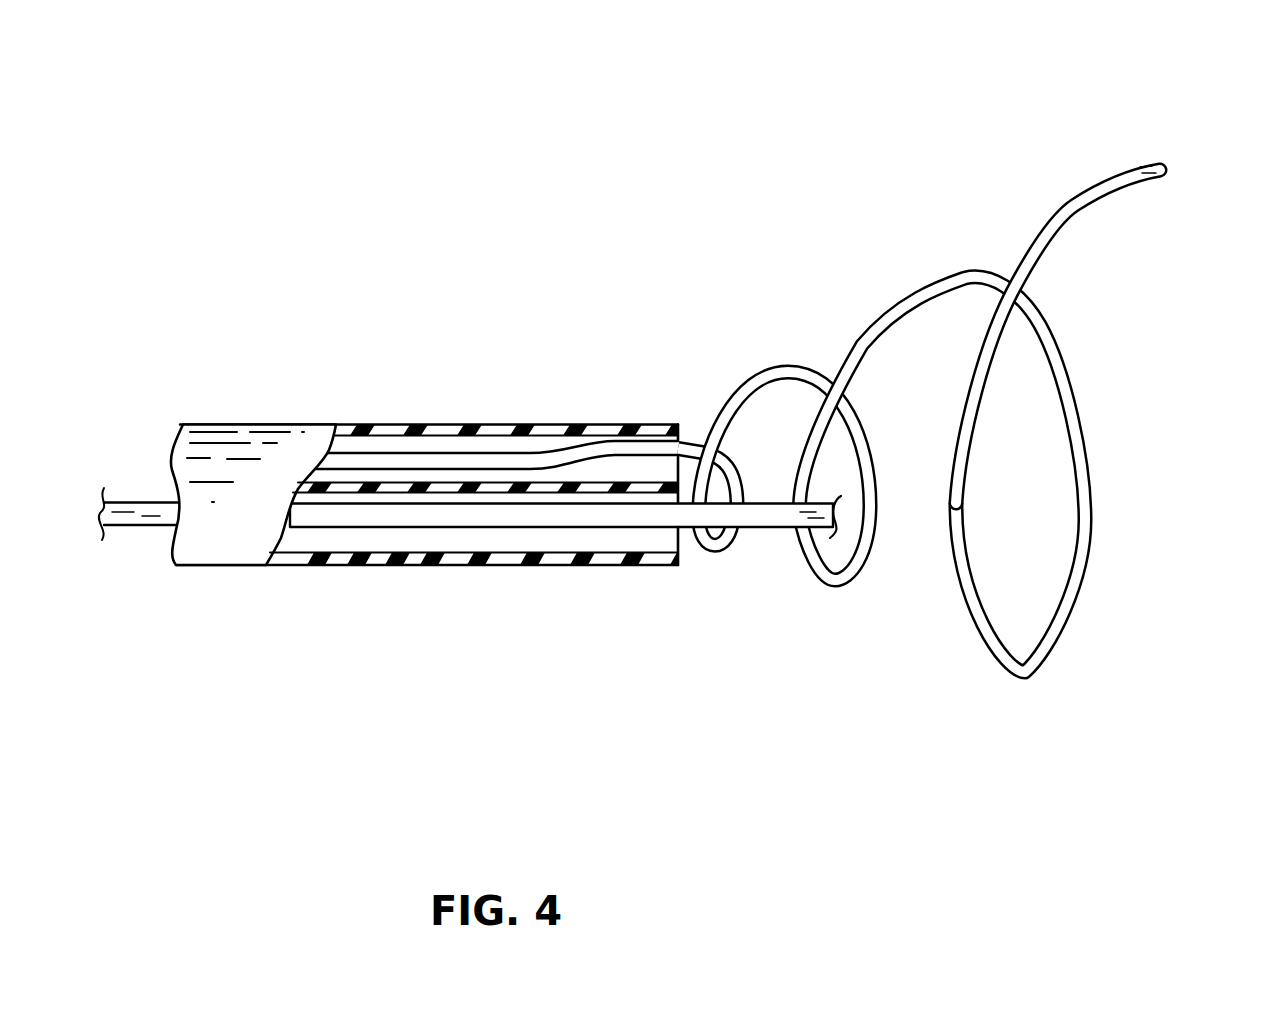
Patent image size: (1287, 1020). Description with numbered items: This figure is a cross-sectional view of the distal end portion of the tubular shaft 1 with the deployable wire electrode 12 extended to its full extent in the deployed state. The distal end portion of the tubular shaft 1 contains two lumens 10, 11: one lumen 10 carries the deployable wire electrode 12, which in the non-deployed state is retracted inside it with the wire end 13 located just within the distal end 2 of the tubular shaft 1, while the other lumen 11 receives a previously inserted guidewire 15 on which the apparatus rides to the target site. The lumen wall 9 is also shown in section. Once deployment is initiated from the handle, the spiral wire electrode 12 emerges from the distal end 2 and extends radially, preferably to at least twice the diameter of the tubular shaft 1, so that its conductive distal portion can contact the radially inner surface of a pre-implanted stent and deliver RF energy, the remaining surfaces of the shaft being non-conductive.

The tubular shaft 1 is at (252, 426).
The distal end 2 is at (683, 420).
The inner tube wall 9 is at (460, 493).
The lumen 10 is at (363, 437).
The lumen 11 is at (337, 537).
The deployable wire electrode 12 is at (443, 450).
The wire end 13 is at (1172, 157).
The guidewire 15 is at (145, 524).